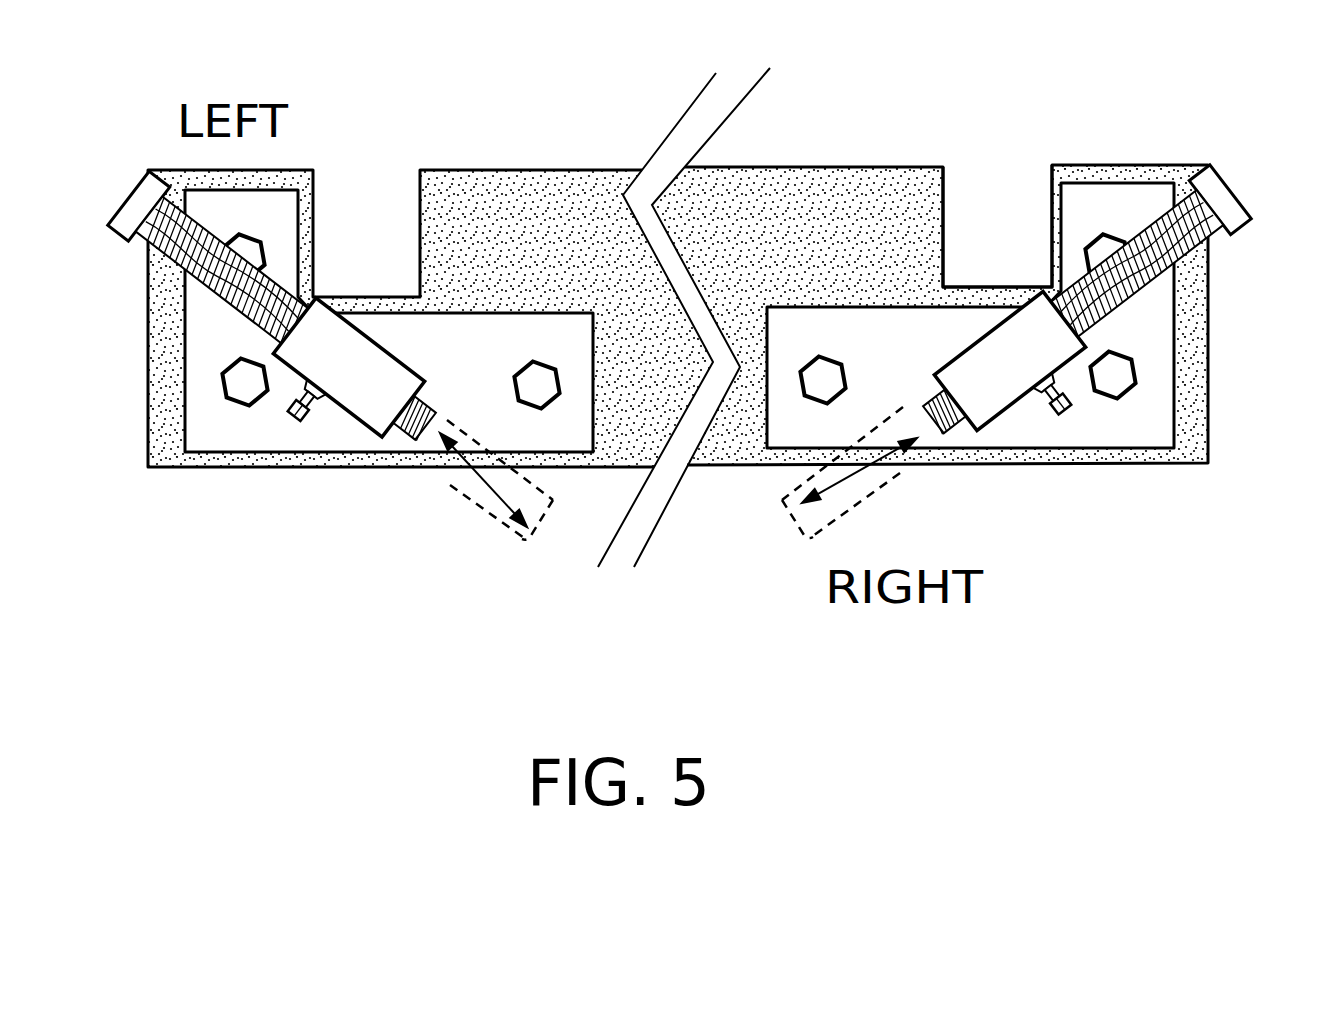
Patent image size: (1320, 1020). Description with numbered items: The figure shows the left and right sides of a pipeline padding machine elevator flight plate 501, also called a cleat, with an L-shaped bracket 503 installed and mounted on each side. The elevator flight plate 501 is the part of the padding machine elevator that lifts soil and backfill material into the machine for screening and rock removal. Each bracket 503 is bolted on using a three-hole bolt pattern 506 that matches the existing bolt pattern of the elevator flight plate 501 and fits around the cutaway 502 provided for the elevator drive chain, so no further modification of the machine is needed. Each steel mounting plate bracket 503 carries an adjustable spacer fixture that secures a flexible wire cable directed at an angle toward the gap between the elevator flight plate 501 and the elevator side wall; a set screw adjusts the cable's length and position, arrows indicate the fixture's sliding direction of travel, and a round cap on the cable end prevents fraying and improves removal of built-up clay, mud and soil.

The elevator flight plate 501 is at (794, 196).
The cutaway 502 is at (989, 178).
The bracket 503 is at (1089, 200).
The three bolt pattern 506 is at (1114, 407).